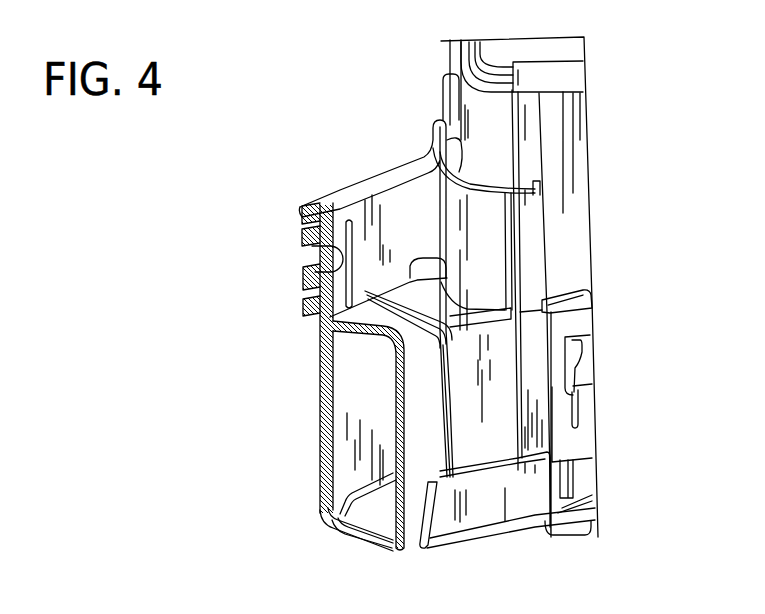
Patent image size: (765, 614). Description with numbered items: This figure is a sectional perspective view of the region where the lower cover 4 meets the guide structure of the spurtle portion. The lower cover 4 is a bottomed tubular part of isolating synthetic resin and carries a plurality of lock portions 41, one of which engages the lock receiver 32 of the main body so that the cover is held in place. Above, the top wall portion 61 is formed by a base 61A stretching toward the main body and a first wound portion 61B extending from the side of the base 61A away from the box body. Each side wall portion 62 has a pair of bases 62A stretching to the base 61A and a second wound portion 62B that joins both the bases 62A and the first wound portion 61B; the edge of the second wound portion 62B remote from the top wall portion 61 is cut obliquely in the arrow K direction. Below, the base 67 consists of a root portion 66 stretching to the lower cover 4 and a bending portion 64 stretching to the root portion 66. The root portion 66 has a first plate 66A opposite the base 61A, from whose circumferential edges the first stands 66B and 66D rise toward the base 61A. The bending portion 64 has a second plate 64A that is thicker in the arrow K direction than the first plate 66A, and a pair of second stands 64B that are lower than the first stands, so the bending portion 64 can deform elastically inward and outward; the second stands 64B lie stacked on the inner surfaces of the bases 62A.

The lower cover 4 is at (588, 480).
The lock portion 41 is at (582, 370).
The lock receiver 32 is at (580, 437).
The top wall portion 61 is at (215, 327).
The base 61A is at (360, 332).
The first wound portion 61B is at (360, 347).
The side wall portion 62 is at (705, 237).
The base 62A is at (455, 372).
The second wound portion 62B is at (441, 363).
The bending portion 64 is at (220, 558).
The second plate 64A is at (360, 522).
The second stand 64B is at (347, 503).
The root portion 66 is at (533, 545).
The first plate 66A is at (427, 547).
The first stand portion 66B is at (433, 496).
The first stand portion 66D is at (478, 505).
The base 67 is at (589, 548).